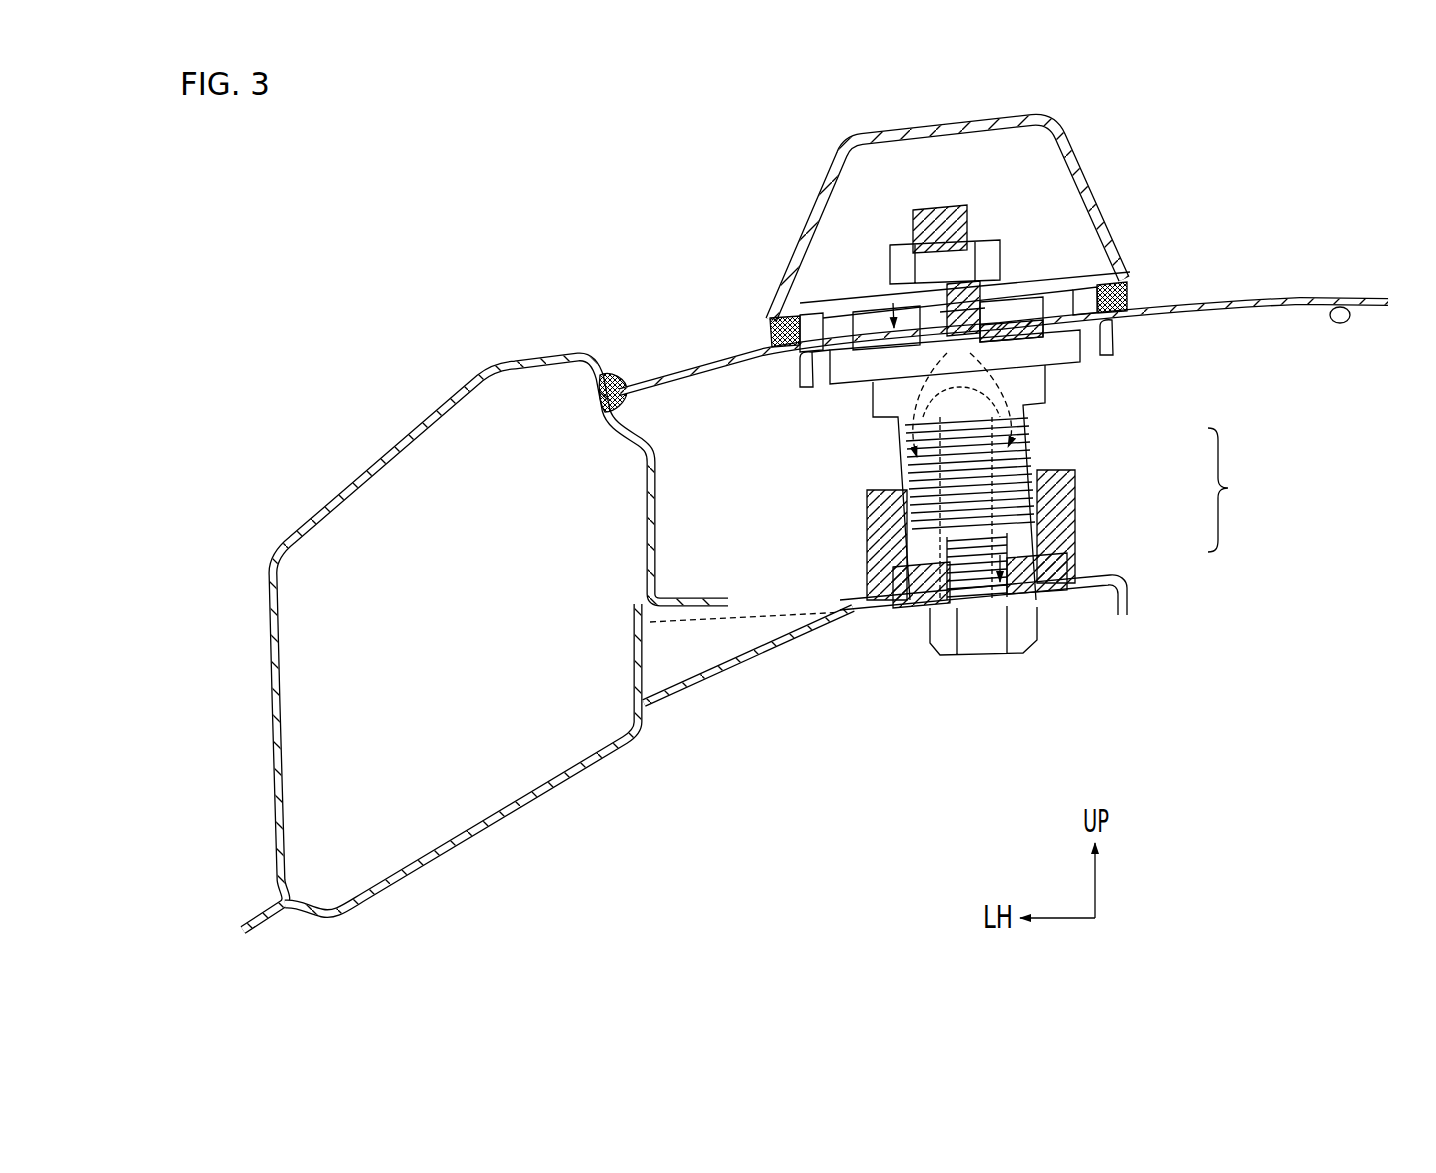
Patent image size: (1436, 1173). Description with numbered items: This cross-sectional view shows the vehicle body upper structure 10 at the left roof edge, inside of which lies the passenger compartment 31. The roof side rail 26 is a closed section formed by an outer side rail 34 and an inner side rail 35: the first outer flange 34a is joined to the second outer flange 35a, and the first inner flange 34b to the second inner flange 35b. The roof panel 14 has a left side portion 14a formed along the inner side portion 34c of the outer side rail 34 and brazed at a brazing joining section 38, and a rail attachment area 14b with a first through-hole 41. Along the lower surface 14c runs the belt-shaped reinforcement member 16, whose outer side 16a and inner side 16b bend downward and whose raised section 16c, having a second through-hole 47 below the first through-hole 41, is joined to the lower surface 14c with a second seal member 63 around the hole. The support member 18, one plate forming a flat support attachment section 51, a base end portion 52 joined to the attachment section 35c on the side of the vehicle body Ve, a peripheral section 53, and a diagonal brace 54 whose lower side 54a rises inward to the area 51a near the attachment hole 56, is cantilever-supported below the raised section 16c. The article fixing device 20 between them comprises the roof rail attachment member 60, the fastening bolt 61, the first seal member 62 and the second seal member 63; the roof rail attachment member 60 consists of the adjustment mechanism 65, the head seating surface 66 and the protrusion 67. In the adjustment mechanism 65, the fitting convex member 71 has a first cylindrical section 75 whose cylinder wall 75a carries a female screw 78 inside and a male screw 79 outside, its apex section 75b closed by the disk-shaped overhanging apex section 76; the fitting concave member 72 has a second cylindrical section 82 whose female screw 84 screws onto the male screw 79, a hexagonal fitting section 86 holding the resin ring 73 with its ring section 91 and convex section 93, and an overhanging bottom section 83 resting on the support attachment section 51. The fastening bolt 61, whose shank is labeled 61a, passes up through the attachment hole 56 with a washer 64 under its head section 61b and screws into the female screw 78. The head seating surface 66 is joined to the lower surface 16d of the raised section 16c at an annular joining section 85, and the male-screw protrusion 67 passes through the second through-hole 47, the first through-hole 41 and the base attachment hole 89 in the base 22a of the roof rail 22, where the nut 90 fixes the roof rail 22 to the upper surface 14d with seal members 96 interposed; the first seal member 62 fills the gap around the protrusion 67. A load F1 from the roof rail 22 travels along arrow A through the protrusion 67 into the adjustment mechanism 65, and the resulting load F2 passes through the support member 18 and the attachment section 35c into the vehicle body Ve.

The vehicle body upper structure 10 is at (500, 285).
The roof panel 14 is at (1308, 297).
The left side portion 14a is at (660, 392).
The rail attachment area 14b is at (1135, 310).
The lower surface 14c is at (1343, 309).
The upper surface 14d is at (1263, 302).
The reinforcement member 16 is at (847, 357).
The outer side 16a is at (805, 370).
The inner side 16b is at (1113, 350).
The raised section 16c is at (1115, 330).
The lower surface 16d is at (858, 377).
The support member 18 is at (1125, 580).
The article fixing device 20 is at (1112, 382).
The roof rail 22 is at (1081, 126).
The base 22a is at (1087, 267).
The roof side rail 26 is at (378, 448).
The passenger compartment 31 is at (1247, 697).
The outer side rail 34 is at (328, 500).
The first outer flange 34a is at (257, 915).
The first inner flange 34b is at (690, 600).
The inner side portion 34c is at (642, 450).
The inner side rail 35 is at (562, 810).
The second outer flange 35a is at (288, 912).
The second inner flange 35b is at (650, 630).
The attachment section on the side of the vehicle body 35c is at (634, 680).
The brazing joining section 38 is at (618, 385).
The first through-hole 41 is at (950, 322).
The second through-hole 47 is at (877, 417).
The support attachment section 51 is at (1050, 590).
The area 51a is at (843, 612).
The base end portion 52 is at (636, 660).
The peripheral section 53 is at (1130, 600).
The diagonal brace 54 is at (762, 656).
The lower side 54a is at (734, 656).
The attachment hole 56 is at (947, 630).
The roof rail attachment member 60 is at (1072, 437).
The fastening bolt 61 is at (997, 653).
The bolt thread 61a is at (1040, 475).
The head section 61b is at (1020, 643).
The first seal member 62 is at (1037, 303).
The second seal member 63 is at (830, 305).
The washer 64 is at (913, 607).
The adjustment mechanism 65 is at (1145, 505).
The head seating surface 66 is at (833, 330).
The protrusion 67 is at (933, 223).
The fitting convex member 71 is at (1040, 437).
The fitting concave member 72 is at (1050, 487).
The resin ring 73 is at (1060, 558).
The first cylindrical section 75 is at (907, 433).
The cylinder wall 75a is at (910, 530).
The apex section 75b is at (873, 390).
The overhanging apex section 76 is at (870, 390).
The female screw 78 is at (895, 583).
The male screw 79 is at (920, 490).
The second cylindrical section 82 is at (870, 553).
The overhanging bottom section 83 is at (868, 597).
The female screw 84 is at (962, 605).
The joining section 85 is at (1030, 330).
The fitting section 86 is at (1033, 583).
The base attachment hole 89 is at (947, 253).
The nut 90 is at (920, 210).
The ring section 91 is at (880, 595).
The convex section 93 is at (905, 605).
The seal member 96 is at (773, 330).
The arrow A is at (975, 358).
The load F1 is at (893, 303).
The load F2 is at (1005, 555).
The vehicle body Ve is at (525, 240).